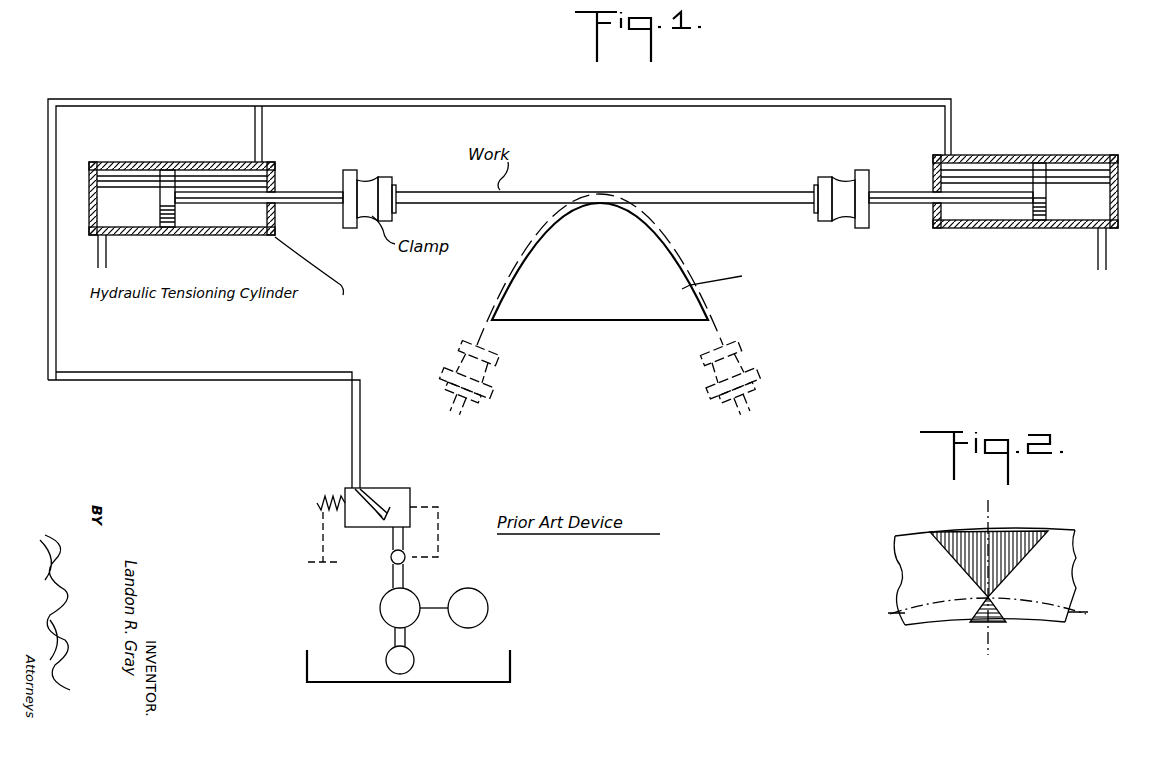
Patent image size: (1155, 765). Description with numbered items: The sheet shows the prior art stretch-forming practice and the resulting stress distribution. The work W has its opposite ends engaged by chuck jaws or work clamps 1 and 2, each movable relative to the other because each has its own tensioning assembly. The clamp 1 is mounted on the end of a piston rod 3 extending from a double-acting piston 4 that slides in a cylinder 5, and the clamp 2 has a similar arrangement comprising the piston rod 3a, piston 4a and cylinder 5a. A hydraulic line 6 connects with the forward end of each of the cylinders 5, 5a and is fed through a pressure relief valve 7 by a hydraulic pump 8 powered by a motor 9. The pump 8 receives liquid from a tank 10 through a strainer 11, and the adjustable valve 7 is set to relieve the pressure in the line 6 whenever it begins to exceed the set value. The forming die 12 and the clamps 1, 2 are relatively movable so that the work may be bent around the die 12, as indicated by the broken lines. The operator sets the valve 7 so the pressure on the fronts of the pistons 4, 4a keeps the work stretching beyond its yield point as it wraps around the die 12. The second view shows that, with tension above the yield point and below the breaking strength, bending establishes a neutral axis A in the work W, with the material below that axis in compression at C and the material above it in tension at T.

In FIG. 1, the work clamp 1 is at (368, 184).
In FIG. 1, the work clamp 2 is at (847, 180).
In FIG. 1, the piston rod 3 is at (302, 190).
In FIG. 1, the piston rod 3a is at (907, 203).
In FIG. 1, the double-acting piston 4 is at (158, 226).
In FIG. 1, the double-acting piston 4a is at (1047, 200).
In FIG. 1, the cylinder 5 is at (231, 162).
In FIG. 1, the cylinder 5a is at (1014, 156).
In FIG. 1, the hydraulic line 6 is at (470, 98).
In FIG. 1, the pressure relief valve 7 is at (407, 492).
In FIG. 1, the hydraulic pump 8 is at (380, 609).
In FIG. 1, the motor 9 is at (486, 612).
In FIG. 1, the tank 10 is at (512, 660).
In FIG. 1, the strainer 11 is at (414, 651).
In FIG. 1, the die 12 is at (616, 310).
In FIG. 2, the tension region T is at (962, 540).
In FIG. 2, the work W is at (1062, 548).
In FIG. 2, the compression region C is at (986, 606).
In FIG. 2, the neutral axis A is at (1070, 612).